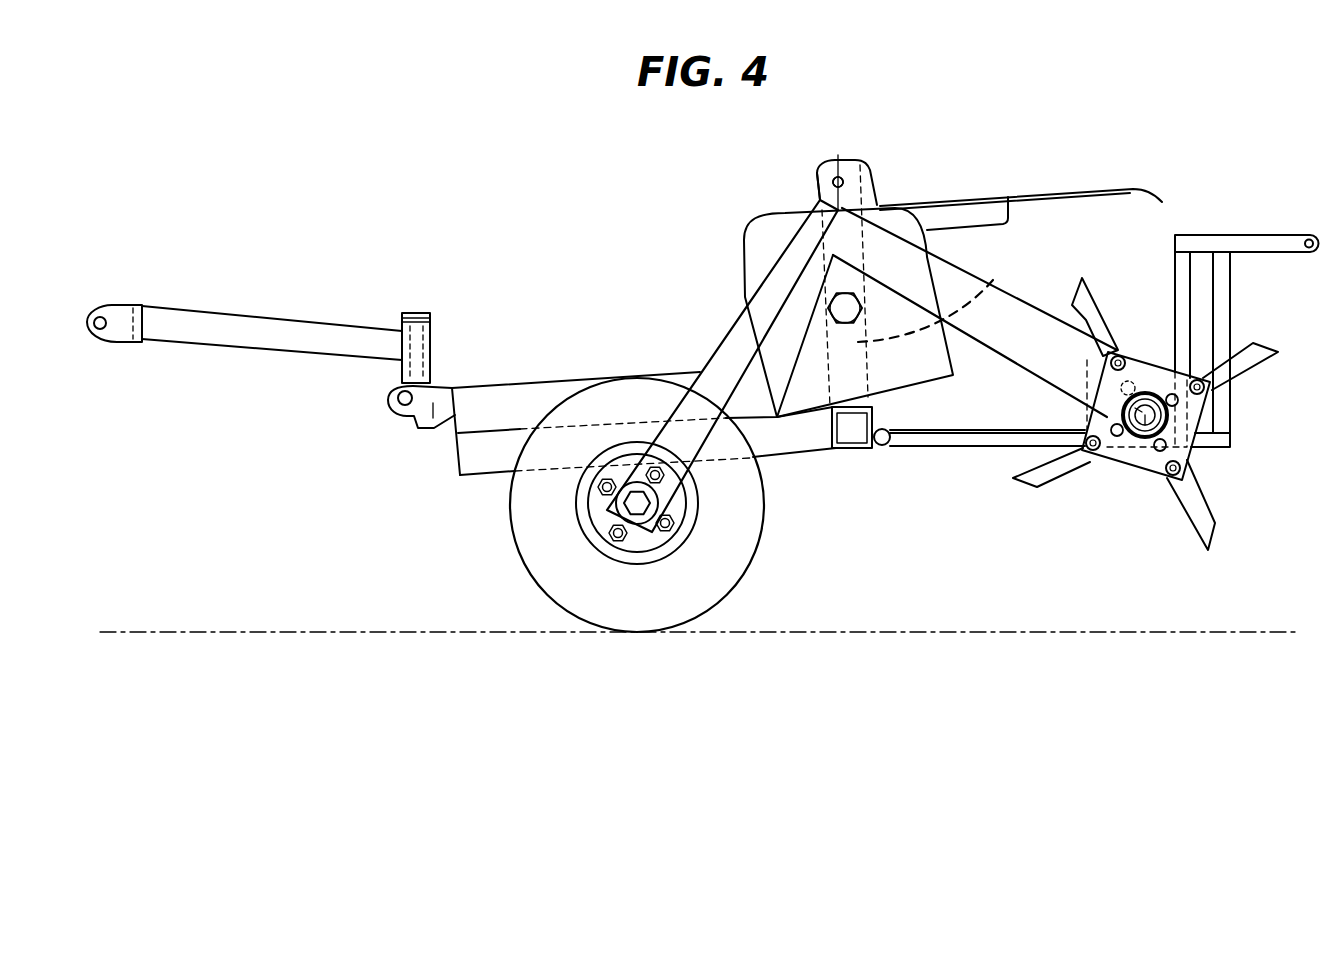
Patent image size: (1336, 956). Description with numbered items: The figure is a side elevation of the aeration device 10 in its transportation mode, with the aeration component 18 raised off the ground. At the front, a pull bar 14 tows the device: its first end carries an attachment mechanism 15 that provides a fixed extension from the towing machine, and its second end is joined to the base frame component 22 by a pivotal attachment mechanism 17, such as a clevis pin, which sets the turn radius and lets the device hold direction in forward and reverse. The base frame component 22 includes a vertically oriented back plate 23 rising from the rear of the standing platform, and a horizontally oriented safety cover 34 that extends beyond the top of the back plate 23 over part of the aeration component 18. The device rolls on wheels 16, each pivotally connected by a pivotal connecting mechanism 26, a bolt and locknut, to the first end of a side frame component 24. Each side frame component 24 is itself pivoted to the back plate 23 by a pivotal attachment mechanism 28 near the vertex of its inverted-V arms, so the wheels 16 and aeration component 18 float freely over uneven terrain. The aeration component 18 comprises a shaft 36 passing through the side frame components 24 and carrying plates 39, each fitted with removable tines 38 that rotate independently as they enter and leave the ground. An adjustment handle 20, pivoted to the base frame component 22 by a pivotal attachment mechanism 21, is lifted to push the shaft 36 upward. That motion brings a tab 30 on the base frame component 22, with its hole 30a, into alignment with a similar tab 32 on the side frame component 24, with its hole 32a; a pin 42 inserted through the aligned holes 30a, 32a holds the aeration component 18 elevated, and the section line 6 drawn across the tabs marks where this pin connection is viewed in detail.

The section line 6- 6 is at (794, 209).
The aeration device 10 is at (597, 243).
The pull bar 14 is at (318, 362).
The attachment mechanism 15 is at (123, 310).
The wheels 16 is at (543, 565).
The pivotal attachment mechanism 17 is at (411, 313).
The aeration component 18 is at (1140, 352).
The adjustment handle 20 is at (1244, 234).
The pivotal attachment mechanism 21 is at (883, 447).
The base frame component 22 is at (768, 462).
The vertically oriented back plate 23 is at (933, 296).
The side frame component 24 is at (704, 351).
The pivotal connecting mechanism 26 is at (637, 505).
The pivotal attachment mechanism 28 is at (843, 308).
The tab 30 is at (815, 174).
The hole 30a is at (843, 182).
The tab 32 is at (848, 169).
The hole 32a is at (949, 178).
The safety cover 34 is at (1138, 192).
The shaft 36 is at (1138, 428).
The tines 38 is at (1073, 293).
The plates 39 is at (1188, 465).
The pin 42 is at (967, 178).